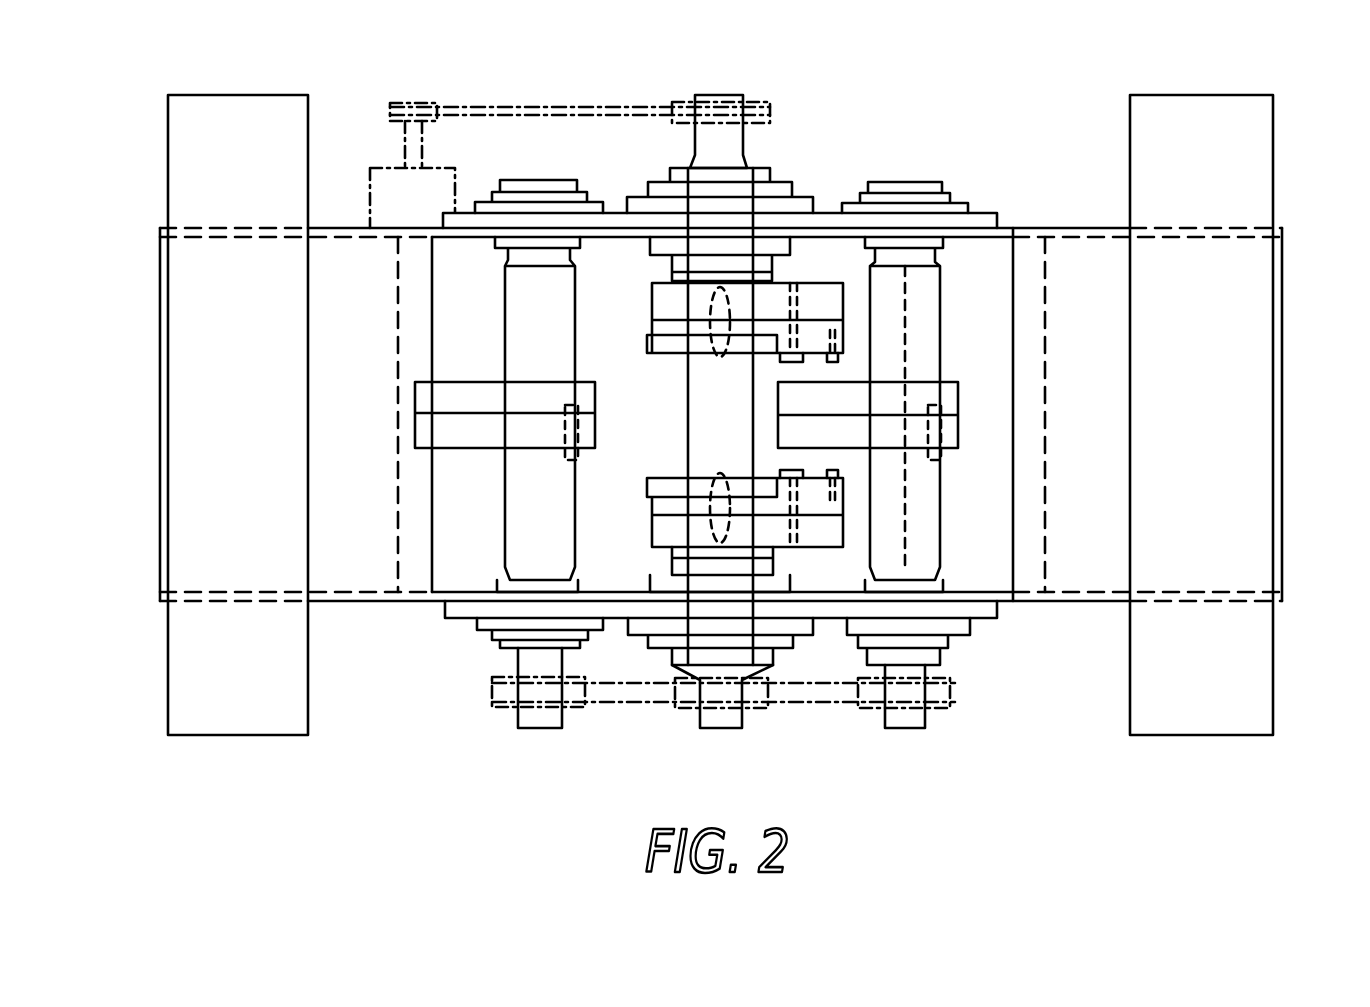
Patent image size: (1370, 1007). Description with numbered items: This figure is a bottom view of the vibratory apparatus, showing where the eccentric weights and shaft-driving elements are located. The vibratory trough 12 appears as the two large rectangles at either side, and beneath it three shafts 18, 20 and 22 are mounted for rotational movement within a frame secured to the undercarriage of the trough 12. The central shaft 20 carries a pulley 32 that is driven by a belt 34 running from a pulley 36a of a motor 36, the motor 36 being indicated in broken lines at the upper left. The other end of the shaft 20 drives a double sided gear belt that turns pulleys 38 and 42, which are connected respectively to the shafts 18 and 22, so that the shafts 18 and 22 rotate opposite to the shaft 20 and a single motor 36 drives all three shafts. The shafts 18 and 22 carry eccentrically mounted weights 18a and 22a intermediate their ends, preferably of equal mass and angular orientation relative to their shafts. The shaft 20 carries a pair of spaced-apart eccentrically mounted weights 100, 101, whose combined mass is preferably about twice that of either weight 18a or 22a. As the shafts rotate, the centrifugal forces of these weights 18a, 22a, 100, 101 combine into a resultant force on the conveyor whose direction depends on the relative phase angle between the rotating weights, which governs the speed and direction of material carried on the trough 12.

The vibratory trough 12 is at (327, 605).
The shaft 18 is at (940, 515).
The eccentrically mounted weight 18a is at (960, 393).
The shaft 20 is at (733, 377).
The shaft 22 is at (505, 553).
The eccentrically mounted weight 22a is at (468, 453).
The pulley 32 is at (770, 100).
The belt 34 is at (552, 105).
The motor 36 is at (388, 165).
The pulley of motor 36a is at (430, 100).
The pulley 38 is at (950, 708).
The pulley 42 is at (506, 708).
The eccentrically mounted weight 100 is at (812, 283).
The eccentrically mounted weight 101 is at (815, 547).